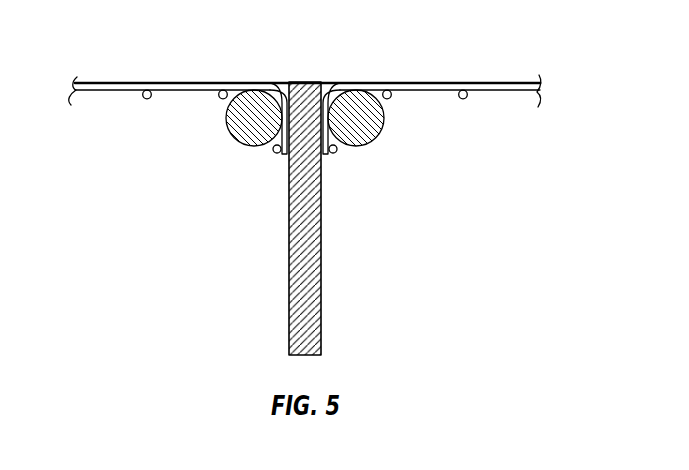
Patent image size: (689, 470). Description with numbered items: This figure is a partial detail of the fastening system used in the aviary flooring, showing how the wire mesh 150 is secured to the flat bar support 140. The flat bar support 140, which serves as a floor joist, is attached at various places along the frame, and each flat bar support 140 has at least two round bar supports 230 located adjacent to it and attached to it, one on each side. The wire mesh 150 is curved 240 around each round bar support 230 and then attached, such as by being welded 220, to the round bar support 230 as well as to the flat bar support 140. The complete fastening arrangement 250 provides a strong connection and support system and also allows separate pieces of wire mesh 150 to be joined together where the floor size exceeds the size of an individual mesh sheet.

The joint assembly 250 is at (485, 29).
The wire mesh 150 is at (125, 91).
The curve of the wire mesh 240 is at (280, 82).
The weld 220 is at (331, 82).
The round bar support 230 is at (248, 128).
The flat bar support 140 is at (311, 245).